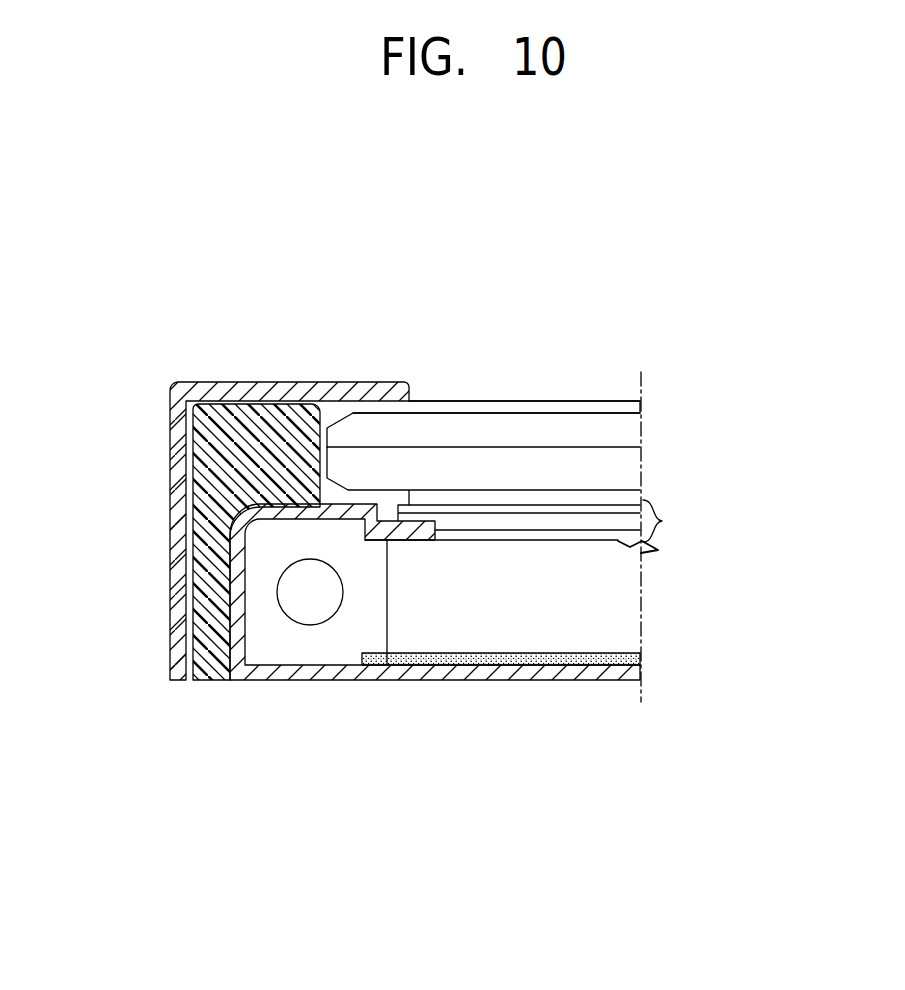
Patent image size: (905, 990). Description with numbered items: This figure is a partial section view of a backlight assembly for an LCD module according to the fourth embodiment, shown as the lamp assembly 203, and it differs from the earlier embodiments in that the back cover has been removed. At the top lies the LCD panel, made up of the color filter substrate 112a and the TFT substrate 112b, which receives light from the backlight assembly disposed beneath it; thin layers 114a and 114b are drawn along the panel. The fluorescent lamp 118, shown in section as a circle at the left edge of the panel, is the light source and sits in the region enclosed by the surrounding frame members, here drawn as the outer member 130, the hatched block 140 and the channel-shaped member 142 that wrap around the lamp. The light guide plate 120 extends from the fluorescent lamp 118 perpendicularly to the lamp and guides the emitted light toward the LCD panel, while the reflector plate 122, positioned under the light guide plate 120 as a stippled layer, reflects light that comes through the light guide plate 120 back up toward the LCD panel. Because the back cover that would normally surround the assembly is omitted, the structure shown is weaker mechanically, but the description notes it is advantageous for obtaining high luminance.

The display apparatus assembly 203 is at (629, 327).
The color filter substrate 112a is at (635, 427).
The TFT substrate 112b is at (627, 473).
The front filter layer 114a is at (440, 407).
The laminated filter layers 114b is at (520, 497).
The fluorescent lamp 118 is at (287, 595).
The light guide plate 120 is at (627, 583).
The reflector plate 122 is at (613, 655).
The housing frame 130 is at (177, 415).
The cushion member 140 is at (195, 473).
The bracket channel 142 is at (263, 680).